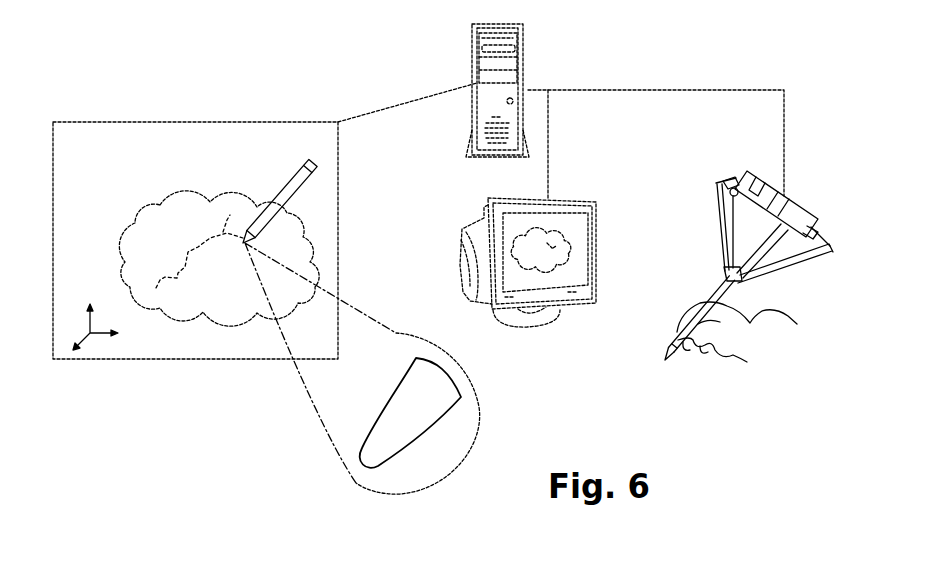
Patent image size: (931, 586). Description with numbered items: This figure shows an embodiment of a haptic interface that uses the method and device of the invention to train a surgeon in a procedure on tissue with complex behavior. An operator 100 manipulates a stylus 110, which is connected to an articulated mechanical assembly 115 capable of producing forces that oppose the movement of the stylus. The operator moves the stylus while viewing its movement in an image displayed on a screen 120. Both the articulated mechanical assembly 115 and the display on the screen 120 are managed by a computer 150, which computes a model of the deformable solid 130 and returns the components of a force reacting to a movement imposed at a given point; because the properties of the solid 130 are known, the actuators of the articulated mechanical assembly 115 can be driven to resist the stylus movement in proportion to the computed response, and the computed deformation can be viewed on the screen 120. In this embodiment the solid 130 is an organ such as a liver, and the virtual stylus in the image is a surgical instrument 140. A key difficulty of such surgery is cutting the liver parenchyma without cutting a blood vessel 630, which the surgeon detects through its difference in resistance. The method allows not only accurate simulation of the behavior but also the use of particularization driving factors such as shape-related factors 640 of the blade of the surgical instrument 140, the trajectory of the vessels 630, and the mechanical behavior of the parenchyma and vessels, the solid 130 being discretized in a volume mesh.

The operator 100 is at (797, 324).
The stylus 110 is at (712, 293).
The articulated mechanical assembly 115 is at (797, 200).
The screen 120 is at (597, 218).
The deformable solid 130 is at (158, 200).
The surgical instrument 140 is at (283, 184).
The computer 150 is at (523, 60).
The blood vessel 630 is at (183, 268).
The shape-related factors of the blade 640 is at (365, 466).